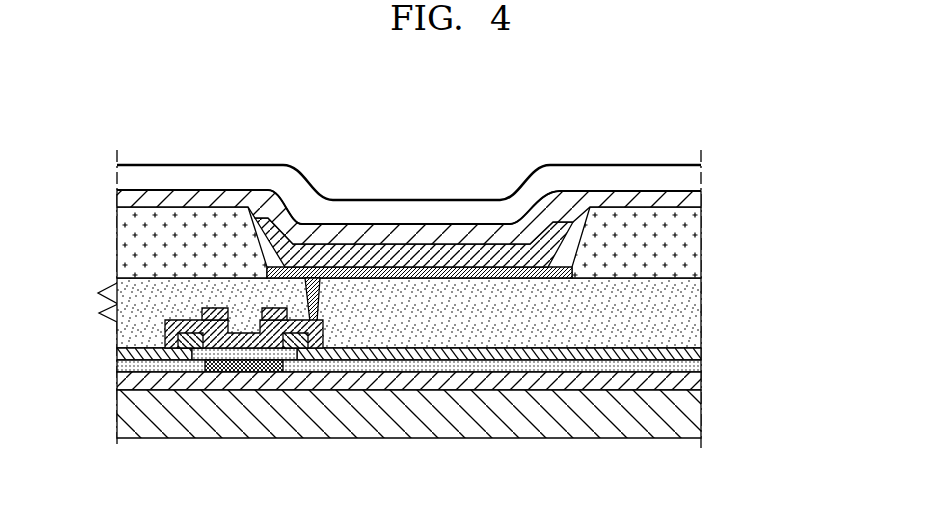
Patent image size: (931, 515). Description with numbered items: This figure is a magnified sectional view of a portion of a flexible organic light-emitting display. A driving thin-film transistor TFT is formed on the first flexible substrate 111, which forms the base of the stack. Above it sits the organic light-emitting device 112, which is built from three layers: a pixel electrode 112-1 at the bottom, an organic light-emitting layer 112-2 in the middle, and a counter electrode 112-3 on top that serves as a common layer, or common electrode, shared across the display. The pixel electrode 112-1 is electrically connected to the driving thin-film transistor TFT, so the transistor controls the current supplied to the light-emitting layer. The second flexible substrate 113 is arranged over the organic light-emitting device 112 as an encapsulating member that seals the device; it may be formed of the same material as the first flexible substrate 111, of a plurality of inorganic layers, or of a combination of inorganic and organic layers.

The first flexible substrate 111 is at (685, 417).
The organic light-emitting device 112 is at (483, 256).
The pixel electrode 112-1 is at (535, 279).
The organic light-emitting layer 112-2 is at (556, 256).
The counter electrode 112-3 is at (690, 199).
The second flexible substrate 113 is at (690, 178).
The driving thin-film transistor TFT is at (243, 309).